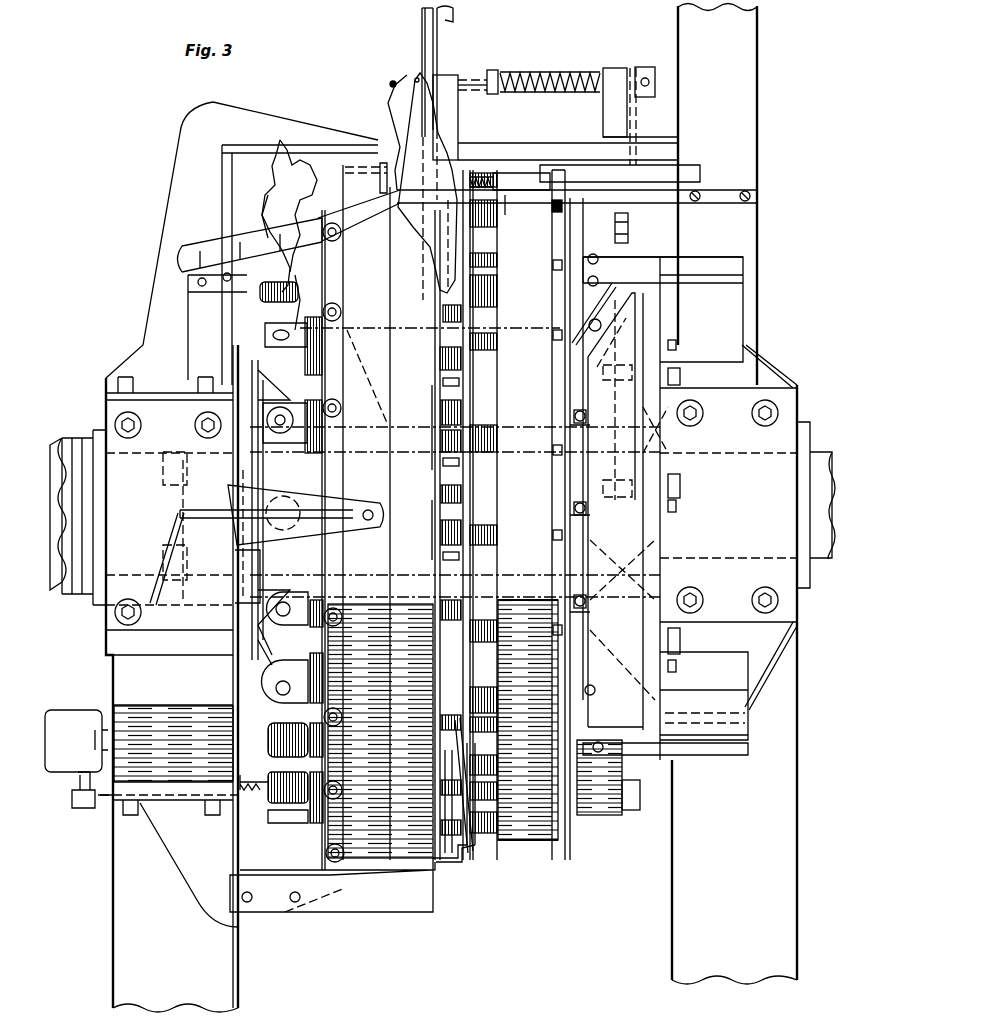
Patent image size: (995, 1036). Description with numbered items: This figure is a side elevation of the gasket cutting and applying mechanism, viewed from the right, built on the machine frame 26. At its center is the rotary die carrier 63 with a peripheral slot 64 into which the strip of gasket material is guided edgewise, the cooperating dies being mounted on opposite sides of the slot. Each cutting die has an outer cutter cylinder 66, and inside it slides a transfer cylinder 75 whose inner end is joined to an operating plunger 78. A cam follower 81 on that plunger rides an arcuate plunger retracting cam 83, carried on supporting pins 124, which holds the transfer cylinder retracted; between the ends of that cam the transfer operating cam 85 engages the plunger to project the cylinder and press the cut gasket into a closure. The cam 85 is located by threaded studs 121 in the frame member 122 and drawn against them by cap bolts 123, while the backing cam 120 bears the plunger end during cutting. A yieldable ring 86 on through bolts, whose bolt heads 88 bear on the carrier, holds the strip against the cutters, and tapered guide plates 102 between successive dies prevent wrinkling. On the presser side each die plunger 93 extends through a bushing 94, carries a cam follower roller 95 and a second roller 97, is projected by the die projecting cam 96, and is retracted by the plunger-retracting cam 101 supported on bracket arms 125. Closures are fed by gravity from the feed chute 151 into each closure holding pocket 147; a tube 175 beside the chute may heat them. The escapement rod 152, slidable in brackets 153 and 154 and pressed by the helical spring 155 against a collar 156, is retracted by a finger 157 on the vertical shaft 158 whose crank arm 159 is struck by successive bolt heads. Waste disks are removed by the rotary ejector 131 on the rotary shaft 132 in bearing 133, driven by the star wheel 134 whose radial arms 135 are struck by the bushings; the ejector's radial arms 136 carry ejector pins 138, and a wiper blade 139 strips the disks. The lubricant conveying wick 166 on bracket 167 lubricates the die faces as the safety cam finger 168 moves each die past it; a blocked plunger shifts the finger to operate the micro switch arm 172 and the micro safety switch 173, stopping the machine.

The frame 26 is at (118, 690).
The rotary die carrier 63 is at (530, 845).
The peripheral slot 64 is at (493, 854).
The outer cutter cylinder 66 is at (495, 402).
The transfer cylinder 75 is at (443, 318).
The operating plunger 78 is at (590, 428).
The cam follower 81 is at (628, 222).
The plunger retracting cam 83 is at (600, 258).
The transfer operating cam 85 is at (640, 330).
The yieldable ring 86 is at (480, 385).
The bolt heads 88 is at (553, 175).
The die plunger 93 is at (295, 305).
The bushing 94 is at (300, 275).
The cam follower roller 95 is at (260, 308).
The die projecting cam 96 is at (262, 640).
The cam follower roller 97 is at (341, 240).
The plunger-retracting cam 101 is at (402, 265).
The tapered guide plate 102 is at (443, 383).
The backing cam 120 is at (672, 443).
The threaded studs 121 is at (676, 344).
The frame member 122 is at (672, 702).
The cap bolts 123 is at (680, 378).
The supporting pins 124 is at (700, 238).
The bracket arms 125 is at (322, 147).
The rotary ejector 131 is at (406, 132).
The rotary shaft 132 is at (360, 212).
The bearing 133 is at (205, 248).
The star wheel 134 is at (278, 148).
The radial arms 135 is at (276, 176).
The radial arms 136 is at (417, 78).
The ejector pins 138 is at (390, 83).
The wiper blade 139 is at (519, 210).
The closure holding pocket 147 is at (440, 352).
The feed chute 151 is at (425, 22).
The escapement rod 152 is at (470, 90).
The bracket 153 is at (458, 118).
The bracket 154 is at (616, 72).
The helical spring 155 is at (555, 65).
The collar 156 is at (496, 73).
The finger 157 is at (645, 70).
The vertical shaft 158 is at (655, 118).
The crank arm 159 is at (602, 178).
The lubricant conveying wick 166 is at (465, 860).
The bracket 167 is at (445, 870).
The safety cam finger 168 is at (267, 780).
The micro switch arm 172 is at (78, 808).
The micro safety switch 173 is at (75, 730).
The tube 175 is at (447, 22).